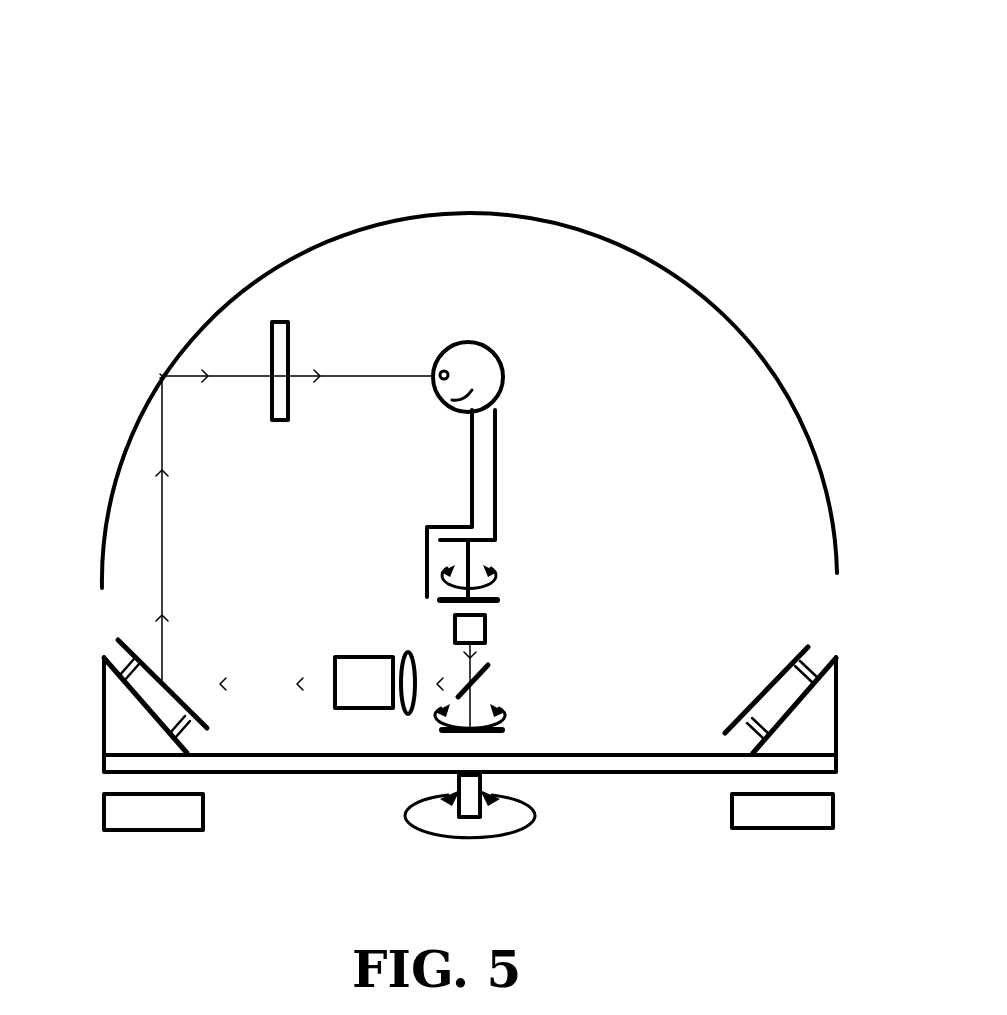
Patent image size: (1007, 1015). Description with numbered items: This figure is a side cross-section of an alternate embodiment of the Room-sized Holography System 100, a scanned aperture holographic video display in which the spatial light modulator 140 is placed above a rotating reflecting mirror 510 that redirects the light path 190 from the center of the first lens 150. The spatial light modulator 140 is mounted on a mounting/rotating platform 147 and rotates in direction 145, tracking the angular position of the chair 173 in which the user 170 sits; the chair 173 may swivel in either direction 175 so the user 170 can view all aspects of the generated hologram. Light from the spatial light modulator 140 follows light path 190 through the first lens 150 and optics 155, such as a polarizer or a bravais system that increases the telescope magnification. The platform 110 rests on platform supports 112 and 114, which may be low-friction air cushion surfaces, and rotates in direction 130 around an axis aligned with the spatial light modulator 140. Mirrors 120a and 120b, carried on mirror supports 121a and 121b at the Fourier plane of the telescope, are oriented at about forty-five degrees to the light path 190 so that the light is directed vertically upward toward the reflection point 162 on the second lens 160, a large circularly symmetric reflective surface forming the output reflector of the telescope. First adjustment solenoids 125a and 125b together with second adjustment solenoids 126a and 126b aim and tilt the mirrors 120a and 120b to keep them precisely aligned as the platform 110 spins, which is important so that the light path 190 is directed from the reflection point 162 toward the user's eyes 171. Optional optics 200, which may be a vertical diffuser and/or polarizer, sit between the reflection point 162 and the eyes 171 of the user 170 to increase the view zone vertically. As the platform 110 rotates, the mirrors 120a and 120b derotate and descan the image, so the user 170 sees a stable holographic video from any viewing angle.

The Room-sized Holography System 100 is at (148, 63).
The platform 110 is at (635, 762).
The platform support 112 is at (182, 815).
The platform support 114 is at (750, 815).
The mirror/scanner 120a is at (128, 655).
The mirror/scanner 120b is at (770, 680).
The mirror support 121a is at (118, 740).
The mirror support 121b is at (780, 745).
The first adjustment solenoid 125a is at (118, 648).
The first adjustment solenoid 125b is at (818, 660).
The second adjustment solenoid 126a is at (135, 728).
The second adjustment solenoid 126b is at (755, 700).
The direction of platform rotation 130 is at (408, 835).
The spatial light modulator 140 is at (475, 632).
The direction of rotation of spatial light modulator 145 is at (498, 707).
The mounting/rotating platform 147 is at (490, 735).
The first lens 150 is at (408, 660).
The optics 155 is at (353, 695).
The second lens 160 is at (617, 237).
The reflection point on second lens 162 is at (163, 375).
The user 170 is at (503, 365).
The user's eyes 171 is at (443, 371).
The chair 173 is at (496, 478).
The direction of chair rotation/swivel 175 is at (497, 577).
The light path 190 is at (162, 568).
The optional optics 200 is at (275, 357).
The rotating reflecting mirror 510 is at (490, 670).